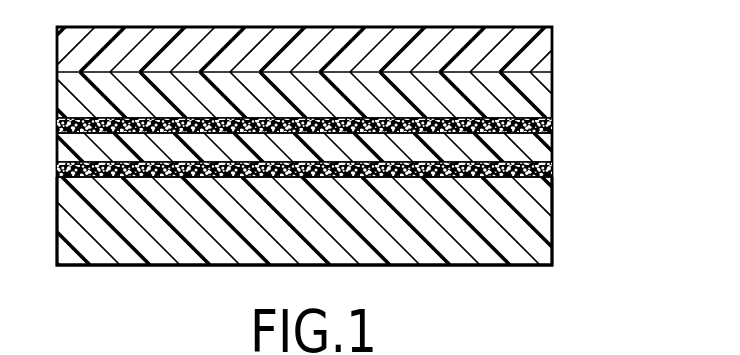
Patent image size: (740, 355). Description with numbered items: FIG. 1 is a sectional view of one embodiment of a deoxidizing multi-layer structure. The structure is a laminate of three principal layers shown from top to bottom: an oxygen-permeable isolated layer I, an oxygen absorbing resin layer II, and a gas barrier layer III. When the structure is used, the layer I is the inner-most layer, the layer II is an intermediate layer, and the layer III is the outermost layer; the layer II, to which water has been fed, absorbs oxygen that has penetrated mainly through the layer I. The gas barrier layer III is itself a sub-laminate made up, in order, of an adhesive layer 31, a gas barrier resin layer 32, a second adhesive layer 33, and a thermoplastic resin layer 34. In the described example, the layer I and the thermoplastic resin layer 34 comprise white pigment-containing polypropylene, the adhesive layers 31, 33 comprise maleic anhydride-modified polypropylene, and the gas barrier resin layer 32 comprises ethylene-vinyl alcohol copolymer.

The oxygen-permeable isolated layer I is at (552, 52).
The oxygen absorbing resin layer II is at (552, 90).
The gas barrier layer III is at (663, 113).
The adhesive layer 31 is at (552, 122).
The gas barrier resin layer 32 is at (552, 147).
The adhesive layer 33 is at (552, 173).
The thermoplastic resin layer 34 is at (552, 235).